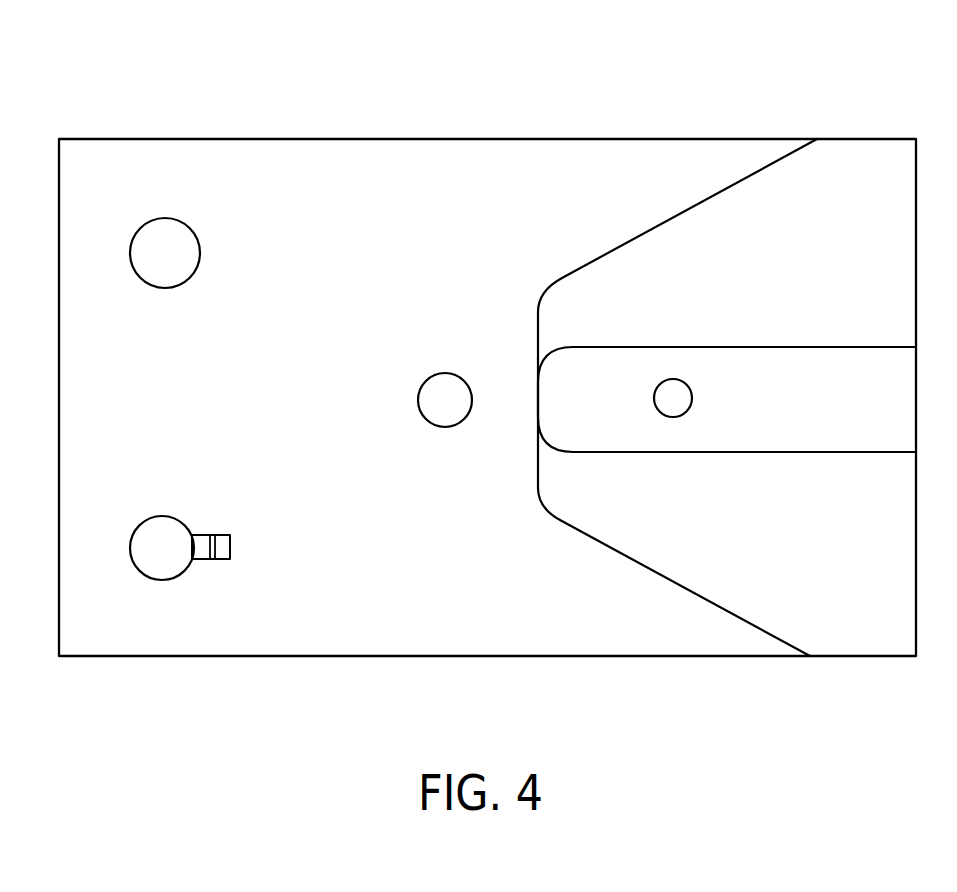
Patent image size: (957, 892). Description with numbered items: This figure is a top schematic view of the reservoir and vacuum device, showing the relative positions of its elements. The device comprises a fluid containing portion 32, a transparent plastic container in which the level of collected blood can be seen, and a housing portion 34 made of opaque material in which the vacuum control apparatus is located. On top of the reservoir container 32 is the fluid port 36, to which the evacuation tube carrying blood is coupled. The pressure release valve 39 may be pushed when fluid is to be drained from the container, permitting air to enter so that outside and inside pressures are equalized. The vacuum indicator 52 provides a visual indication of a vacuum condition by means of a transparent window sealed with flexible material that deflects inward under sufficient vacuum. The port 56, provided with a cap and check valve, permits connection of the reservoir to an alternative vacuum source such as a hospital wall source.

The fluid containing portion 32 is at (353, 139).
The housing portion 34 is at (819, 269).
The fluid port 36 is at (693, 394).
The pressure release valve 39 is at (233, 543).
The vacuum indicator 52 is at (440, 428).
The port 56 is at (200, 245).